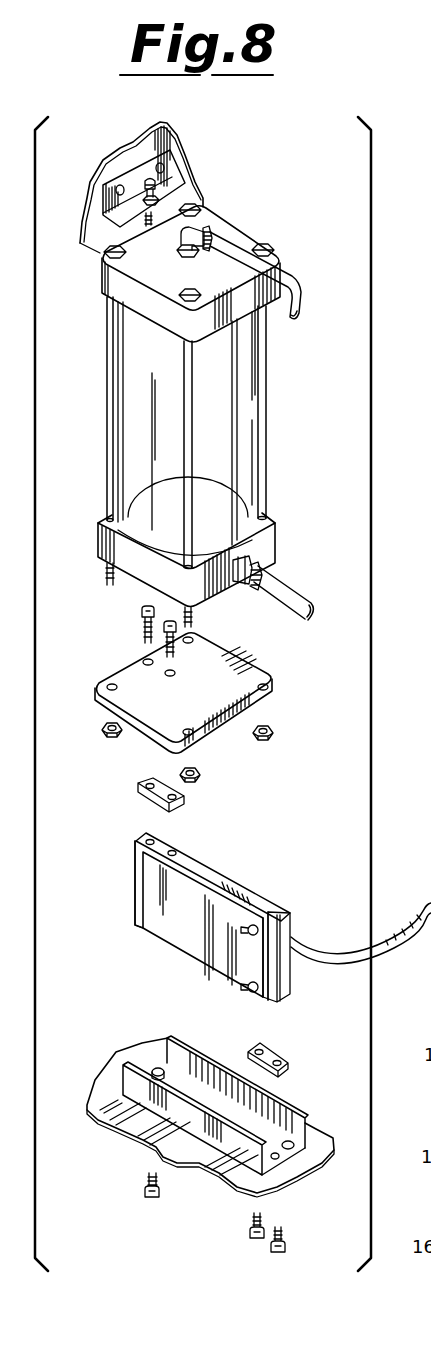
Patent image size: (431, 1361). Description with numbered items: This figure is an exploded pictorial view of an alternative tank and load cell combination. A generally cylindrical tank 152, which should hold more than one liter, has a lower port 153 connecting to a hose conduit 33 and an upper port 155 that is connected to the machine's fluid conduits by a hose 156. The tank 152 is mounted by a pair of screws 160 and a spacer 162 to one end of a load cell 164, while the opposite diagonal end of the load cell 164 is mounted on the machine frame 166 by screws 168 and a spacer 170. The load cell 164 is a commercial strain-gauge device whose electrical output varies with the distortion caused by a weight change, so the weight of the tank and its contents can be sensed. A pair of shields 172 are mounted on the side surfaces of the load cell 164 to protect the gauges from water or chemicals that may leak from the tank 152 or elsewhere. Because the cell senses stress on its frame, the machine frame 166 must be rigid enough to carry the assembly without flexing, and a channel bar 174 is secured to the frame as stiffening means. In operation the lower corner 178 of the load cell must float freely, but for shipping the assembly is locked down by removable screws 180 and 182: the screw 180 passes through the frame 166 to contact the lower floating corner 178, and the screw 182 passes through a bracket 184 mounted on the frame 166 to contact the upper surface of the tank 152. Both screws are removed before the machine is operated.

The hose conduit 33 is at (283, 588).
The tank 152 is at (252, 405).
The lower port 153 is at (262, 562).
The upper port 155 is at (206, 226).
The hose 156 is at (282, 280).
The screws 160 is at (140, 620).
The spacer 162 is at (137, 795).
The load cell 164 is at (260, 905).
The machine frame 166 is at (175, 135).
The screws 168 is at (275, 1256).
The spacer 170 is at (276, 1052).
The shields 172 is at (228, 870).
The channel bar 174 is at (290, 1110).
The lower corner 178 is at (141, 926).
The screw 180 is at (148, 1200).
The screw 182 is at (195, 205).
The bracket 184 is at (175, 185).